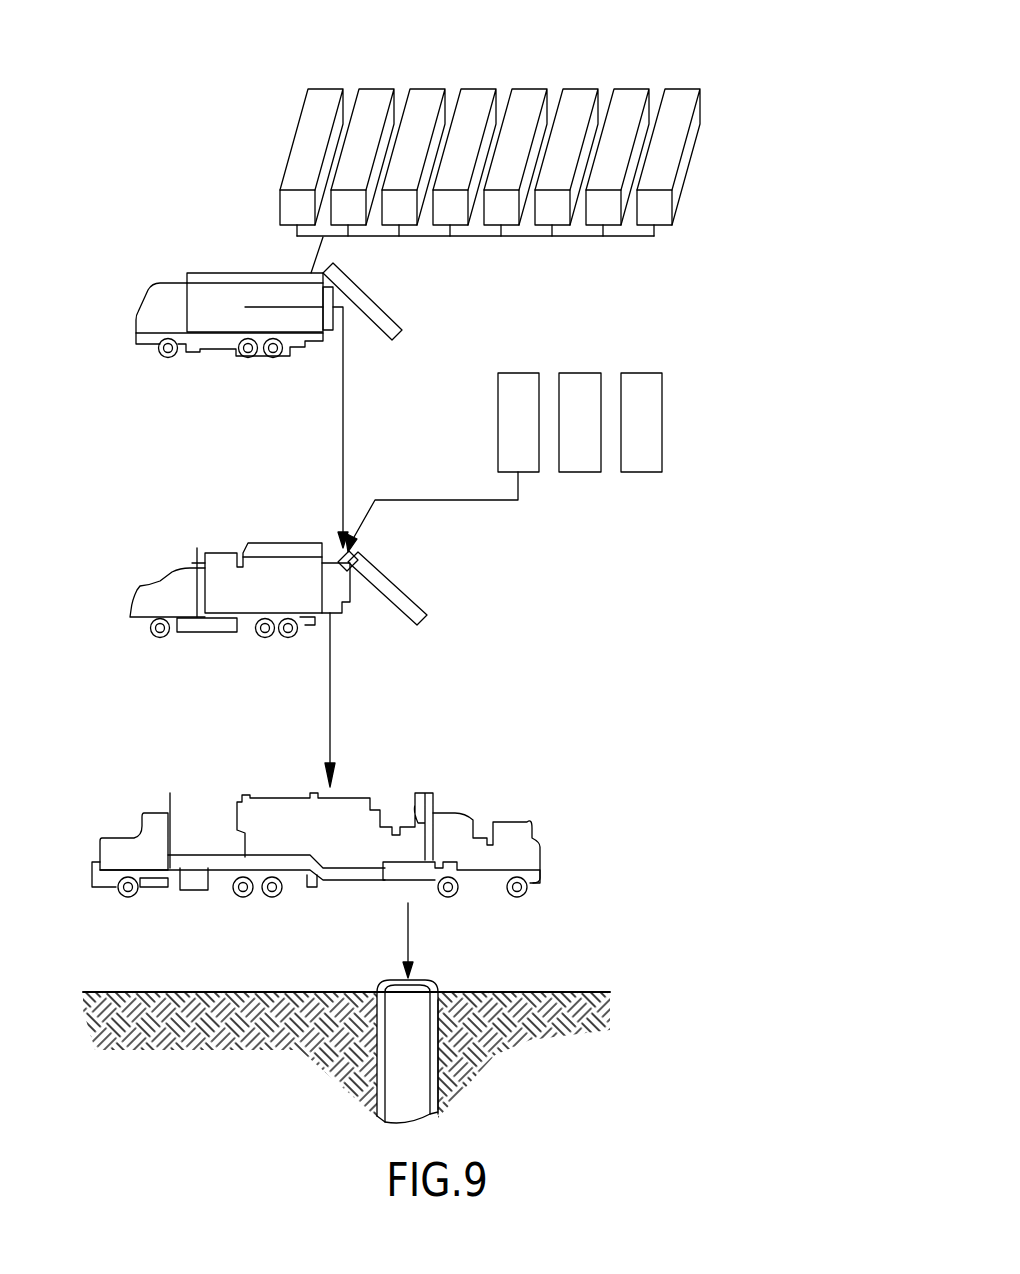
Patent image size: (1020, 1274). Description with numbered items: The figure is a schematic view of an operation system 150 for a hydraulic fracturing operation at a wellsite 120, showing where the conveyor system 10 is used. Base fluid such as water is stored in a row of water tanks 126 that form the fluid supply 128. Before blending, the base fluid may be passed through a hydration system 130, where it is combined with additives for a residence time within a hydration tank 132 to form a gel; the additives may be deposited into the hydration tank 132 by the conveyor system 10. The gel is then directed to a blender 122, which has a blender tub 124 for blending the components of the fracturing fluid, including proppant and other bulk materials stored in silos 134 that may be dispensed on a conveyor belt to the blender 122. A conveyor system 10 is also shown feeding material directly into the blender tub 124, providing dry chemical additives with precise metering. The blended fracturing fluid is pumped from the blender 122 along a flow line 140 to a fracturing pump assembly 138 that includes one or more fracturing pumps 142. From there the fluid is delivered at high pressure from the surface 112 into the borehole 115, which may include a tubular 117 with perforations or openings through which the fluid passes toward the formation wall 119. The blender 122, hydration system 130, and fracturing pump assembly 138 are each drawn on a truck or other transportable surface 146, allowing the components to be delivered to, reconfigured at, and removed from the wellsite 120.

The conveyor system 10 is at (397, 320).
The surface 112 is at (242, 992).
The borehole 115 is at (392, 1080).
The tubular 117 is at (428, 1075).
The formation wall 119 is at (440, 1052).
The wellsite 120 is at (712, 317).
The blender 122 is at (244, 554).
The blender tub 124 is at (342, 570).
The water tanks 126 is at (325, 88).
The fluid supply 128 is at (536, 140).
The hydration system 130 is at (193, 291).
The hydration tank 132 is at (285, 273).
The silos 134 is at (498, 422).
The fracturing pump assembly 138 is at (309, 814).
The flow line 140 is at (330, 717).
The fracturing pumps 142 is at (345, 797).
The transportable surface 146 is at (168, 358).
The operation system 150 is at (163, 202).